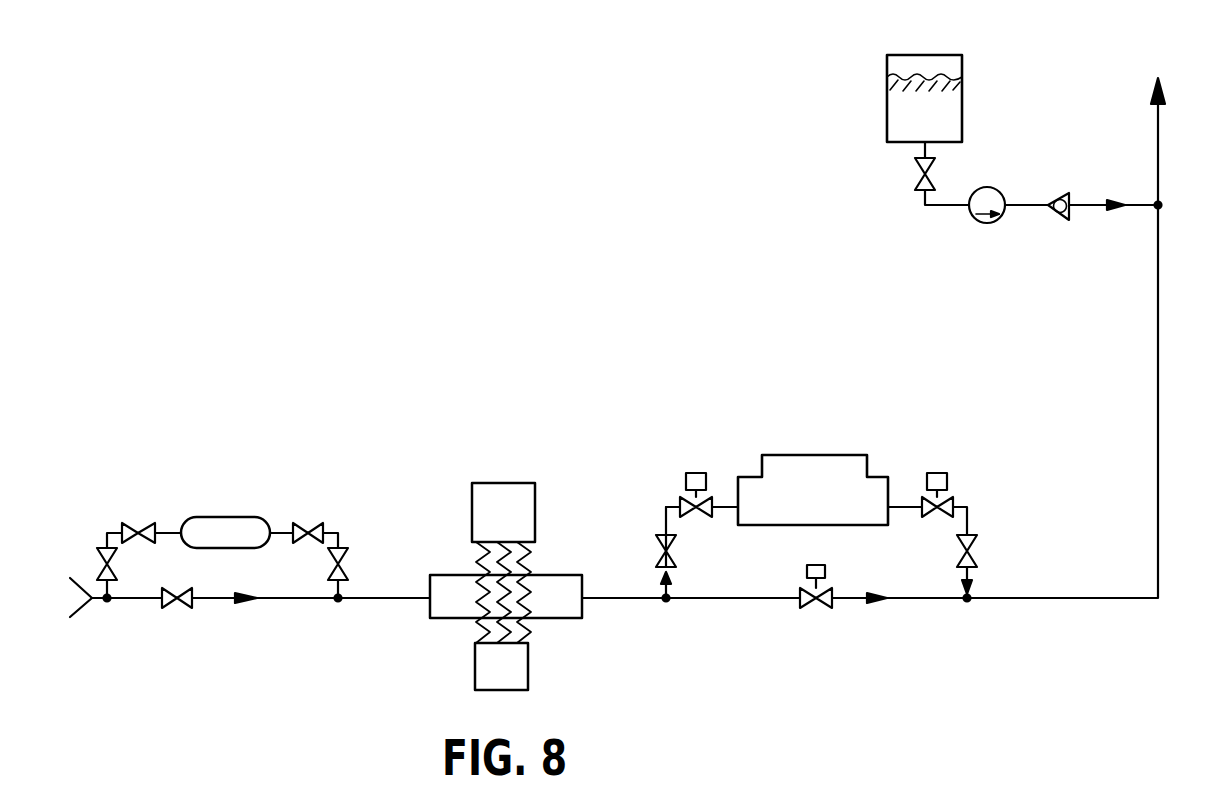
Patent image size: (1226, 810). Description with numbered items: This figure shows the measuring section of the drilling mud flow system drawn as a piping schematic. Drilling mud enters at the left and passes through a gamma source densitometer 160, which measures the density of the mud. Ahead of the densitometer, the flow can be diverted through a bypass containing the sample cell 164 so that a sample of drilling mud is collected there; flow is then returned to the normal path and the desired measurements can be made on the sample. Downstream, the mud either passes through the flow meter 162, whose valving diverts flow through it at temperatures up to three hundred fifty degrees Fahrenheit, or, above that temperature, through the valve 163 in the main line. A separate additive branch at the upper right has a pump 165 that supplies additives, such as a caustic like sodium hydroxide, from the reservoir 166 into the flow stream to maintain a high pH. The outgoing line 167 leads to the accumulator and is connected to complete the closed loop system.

The gamma source densitometer 160 is at (450, 575).
The flow meter 162 is at (739, 516).
The valve 163 is at (825, 588).
The sample cell 164 is at (217, 548).
The pump 165 is at (987, 187).
The reservoir 166 is at (963, 109).
The line 167 is at (1158, 152).